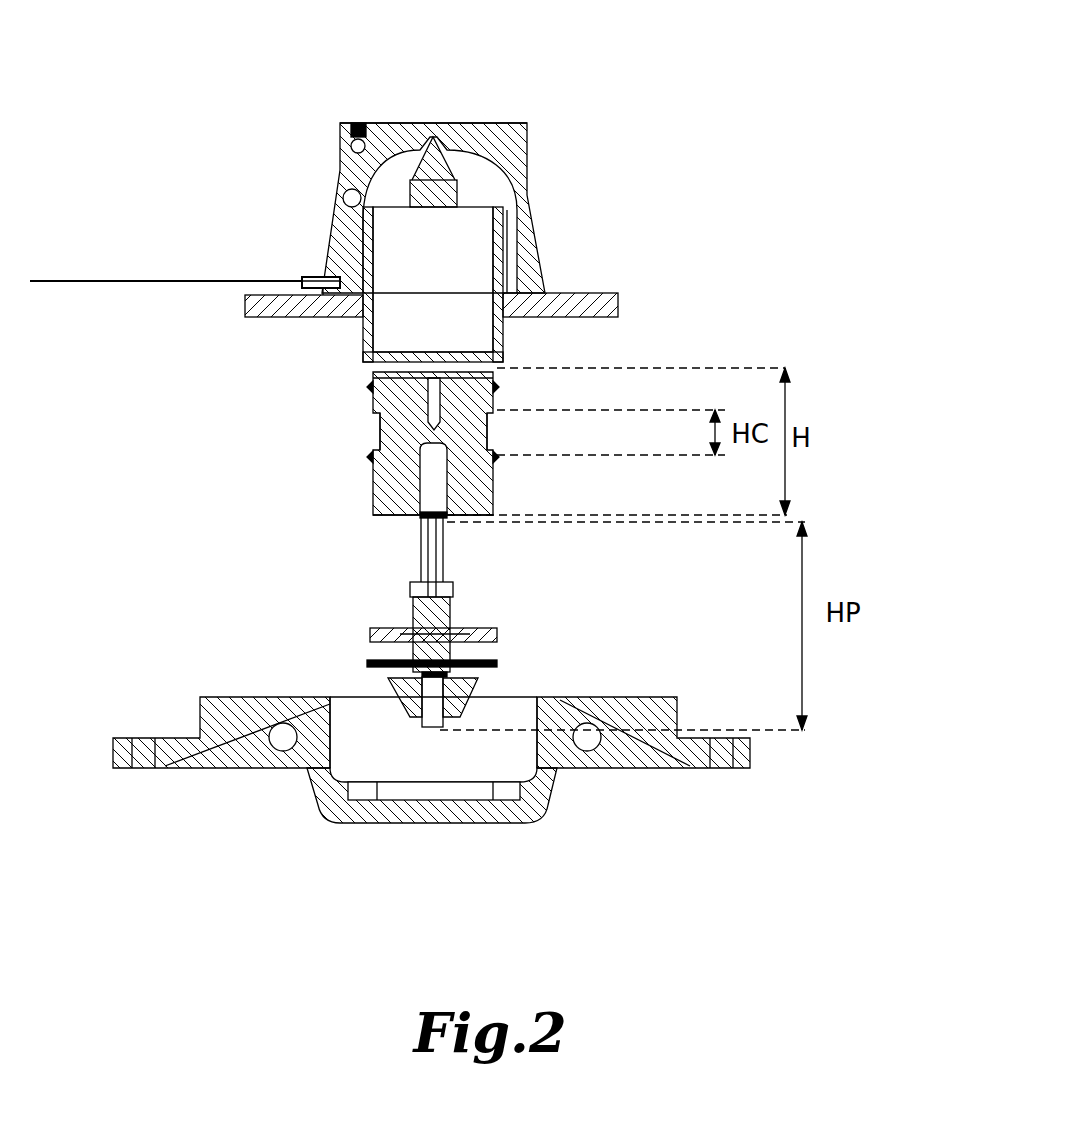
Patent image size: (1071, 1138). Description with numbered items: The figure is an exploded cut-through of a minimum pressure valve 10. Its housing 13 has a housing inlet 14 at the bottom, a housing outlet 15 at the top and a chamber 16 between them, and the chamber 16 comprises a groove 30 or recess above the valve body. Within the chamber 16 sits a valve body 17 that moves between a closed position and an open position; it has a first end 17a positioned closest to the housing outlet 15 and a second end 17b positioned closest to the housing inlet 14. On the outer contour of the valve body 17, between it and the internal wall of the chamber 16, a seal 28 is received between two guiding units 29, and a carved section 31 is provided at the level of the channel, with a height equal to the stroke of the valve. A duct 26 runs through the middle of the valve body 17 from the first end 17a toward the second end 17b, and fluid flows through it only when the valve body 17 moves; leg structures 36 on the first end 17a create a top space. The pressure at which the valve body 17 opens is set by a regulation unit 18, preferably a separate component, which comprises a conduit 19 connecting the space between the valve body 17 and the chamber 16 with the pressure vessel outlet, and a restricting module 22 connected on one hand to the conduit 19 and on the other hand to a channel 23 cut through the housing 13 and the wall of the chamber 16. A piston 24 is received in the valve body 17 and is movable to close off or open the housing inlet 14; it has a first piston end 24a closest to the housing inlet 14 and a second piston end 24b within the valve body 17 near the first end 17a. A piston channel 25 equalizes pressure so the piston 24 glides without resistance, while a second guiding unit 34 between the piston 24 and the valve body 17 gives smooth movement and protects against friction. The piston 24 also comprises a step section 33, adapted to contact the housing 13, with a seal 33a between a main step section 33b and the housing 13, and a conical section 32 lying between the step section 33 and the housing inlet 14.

The minimum pressure valve 10 is at (766, 242).
The housing 13 is at (535, 200).
The housing inlet 14 is at (400, 822).
The housing outlet 15 is at (452, 147).
The chamber 16 is at (385, 235).
The valve body 17 is at (497, 410).
The first end 17a is at (492, 372).
The second end 17b is at (497, 507).
The regulation unit 18 is at (163, 108).
The conduit 19 is at (212, 280).
The restricting module 22 is at (322, 278).
The channel 23 is at (305, 277).
The piston 24 is at (413, 600).
The first piston end 24a is at (375, 697).
The second piston end 24b is at (445, 520).
The piston channel 25 is at (420, 555).
The duct 26 is at (378, 368).
The seal 28 is at (378, 447).
The guiding unit 29 is at (370, 387).
The groove 30 is at (355, 124).
The carved section 31 is at (380, 425).
The conical section 32 is at (467, 680).
The step section 33 is at (473, 630).
The seal 33a is at (367, 663).
The main step section 33b is at (368, 633).
The second guiding unit 34 is at (443, 548).
The leg structures 36 is at (507, 310).